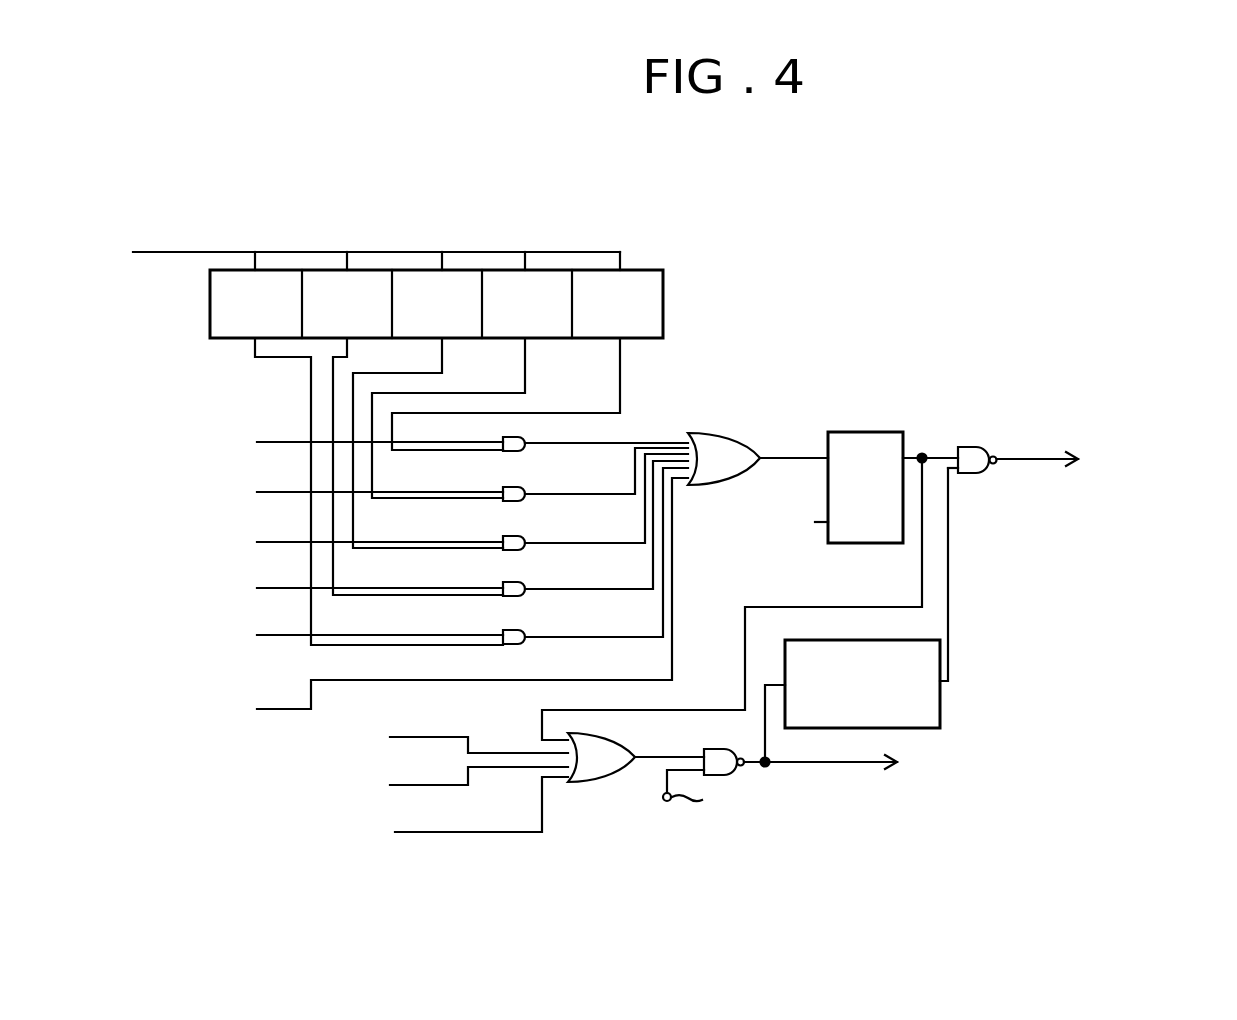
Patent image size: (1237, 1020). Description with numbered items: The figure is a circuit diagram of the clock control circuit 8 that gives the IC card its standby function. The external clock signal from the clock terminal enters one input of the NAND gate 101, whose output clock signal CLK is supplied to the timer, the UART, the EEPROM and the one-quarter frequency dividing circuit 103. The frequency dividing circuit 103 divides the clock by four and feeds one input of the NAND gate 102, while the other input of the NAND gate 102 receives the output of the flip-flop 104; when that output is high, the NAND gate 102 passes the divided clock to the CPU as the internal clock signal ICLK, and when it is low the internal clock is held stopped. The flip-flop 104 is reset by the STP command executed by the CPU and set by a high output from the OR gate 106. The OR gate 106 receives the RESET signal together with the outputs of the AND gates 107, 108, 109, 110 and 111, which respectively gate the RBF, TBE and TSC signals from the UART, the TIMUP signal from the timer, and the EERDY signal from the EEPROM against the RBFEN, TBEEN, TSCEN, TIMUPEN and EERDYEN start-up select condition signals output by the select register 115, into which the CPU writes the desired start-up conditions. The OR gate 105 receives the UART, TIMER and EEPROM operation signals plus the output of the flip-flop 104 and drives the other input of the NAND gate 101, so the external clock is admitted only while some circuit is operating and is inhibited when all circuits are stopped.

The clock control circuit 8 is at (821, 843).
The select register 115 is at (665, 293).
The AND gate 107 is at (527, 438).
The AND gate 108 is at (522, 487).
The AND gate 109 is at (522, 537).
The AND gate 110 is at (522, 583).
The AND gate 111 is at (522, 632).
The OR gate 106 is at (738, 435).
The flip-flop 104 is at (872, 432).
The NAND gate 102 is at (975, 447).
The 1/4 frequency dividing circuit 103 is at (918, 640).
The OR gate 105 is at (627, 752).
The NAND gate 101 is at (713, 749).